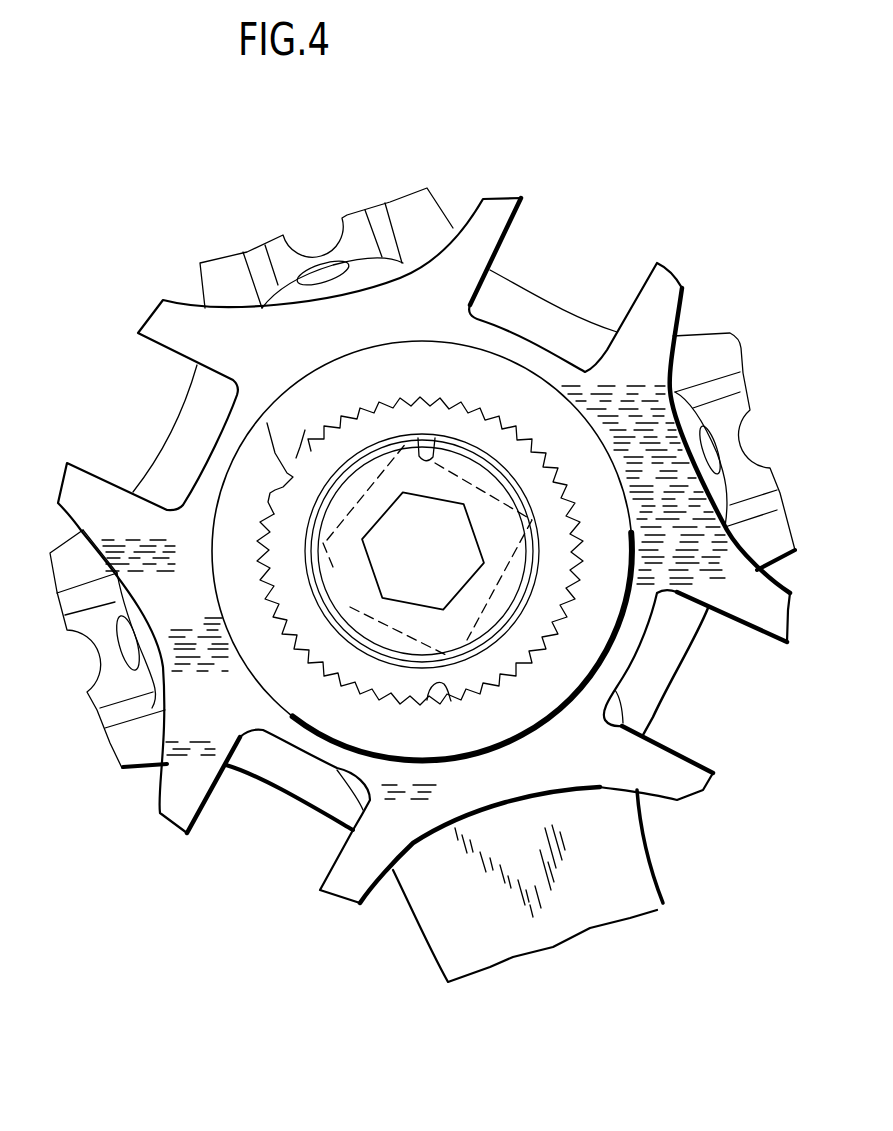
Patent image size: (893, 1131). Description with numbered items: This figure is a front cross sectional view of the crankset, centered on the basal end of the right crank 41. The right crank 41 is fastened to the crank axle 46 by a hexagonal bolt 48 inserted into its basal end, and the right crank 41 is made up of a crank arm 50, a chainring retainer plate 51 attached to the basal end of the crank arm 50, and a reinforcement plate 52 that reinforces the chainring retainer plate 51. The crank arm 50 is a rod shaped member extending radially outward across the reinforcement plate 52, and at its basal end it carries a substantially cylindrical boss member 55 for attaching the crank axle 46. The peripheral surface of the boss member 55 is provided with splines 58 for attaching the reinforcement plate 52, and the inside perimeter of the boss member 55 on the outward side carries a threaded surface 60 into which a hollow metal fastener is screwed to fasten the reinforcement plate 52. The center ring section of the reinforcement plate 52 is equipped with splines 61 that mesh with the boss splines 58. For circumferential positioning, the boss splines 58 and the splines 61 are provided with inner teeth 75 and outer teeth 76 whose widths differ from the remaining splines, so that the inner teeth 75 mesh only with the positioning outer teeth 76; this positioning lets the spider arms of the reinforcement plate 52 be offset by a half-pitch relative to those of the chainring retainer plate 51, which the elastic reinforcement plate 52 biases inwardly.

The right crank 41 is at (664, 891).
The crank axle 46 is at (306, 537).
The hexagonal bolt 48 is at (370, 672).
The crank arm 50 is at (627, 851).
The chainring retainer plate 51 is at (130, 767).
The reinforcement plate 52 is at (185, 808).
The boss member 55 is at (347, 655).
The splines 58 is at (465, 700).
The threaded surface 60 is at (423, 455).
The splines 61 is at (432, 625).
The inner teeth 75 is at (272, 458).
The outer teeth 76 is at (300, 424).